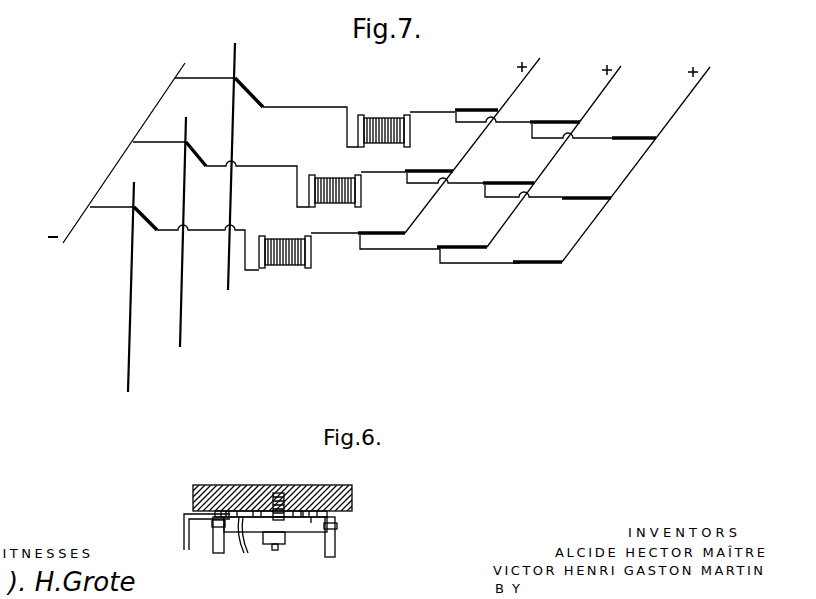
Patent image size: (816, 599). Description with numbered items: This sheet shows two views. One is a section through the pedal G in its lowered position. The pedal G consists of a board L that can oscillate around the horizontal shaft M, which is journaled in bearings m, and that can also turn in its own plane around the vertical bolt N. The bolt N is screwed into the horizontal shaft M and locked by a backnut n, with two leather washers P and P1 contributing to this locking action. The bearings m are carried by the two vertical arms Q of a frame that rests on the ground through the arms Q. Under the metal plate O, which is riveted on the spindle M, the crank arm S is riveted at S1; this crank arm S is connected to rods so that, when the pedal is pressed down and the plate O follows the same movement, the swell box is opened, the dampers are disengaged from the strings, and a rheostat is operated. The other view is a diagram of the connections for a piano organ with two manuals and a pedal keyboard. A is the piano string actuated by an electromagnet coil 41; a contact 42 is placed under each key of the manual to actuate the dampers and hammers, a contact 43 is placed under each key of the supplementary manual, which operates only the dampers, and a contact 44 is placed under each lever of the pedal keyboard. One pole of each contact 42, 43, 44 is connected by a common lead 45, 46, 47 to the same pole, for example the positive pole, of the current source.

In FIG. 7, the electromagnet coil 41 is at (388, 113).
In FIG. 7, the contact 42 is at (462, 104).
In FIG. 7, the contact 43 is at (536, 118).
In FIG. 7, the contact 44 is at (618, 131).
In FIG. 7, the common lead 45 is at (514, 86).
In FIG. 7, the common lead 46 is at (598, 90).
In FIG. 7, the common lead 47 is at (680, 95).
In FIG. 7, the piano string A is at (228, 284).
In FIG. 6, the board L is at (190, 494).
In FIG. 6, the pedal G is at (260, 488).
In FIG. 6, the vertical bolt N is at (277, 492).
In FIG. 6, the leather washer P is at (233, 513).
In FIG. 6, the leather washer P1 is at (303, 485).
In FIG. 6, the crank arm S is at (186, 533).
In FIG. 6, the rivet point S1 is at (246, 554).
In FIG. 6, the bearings m is at (213, 523).
In FIG. 6, the vertical arms Q is at (217, 553).
In FIG. 6, the backnut n is at (275, 551).
In FIG. 6, the horizontal shaft M is at (298, 527).
In FIG. 6, the metal plate O is at (311, 518).